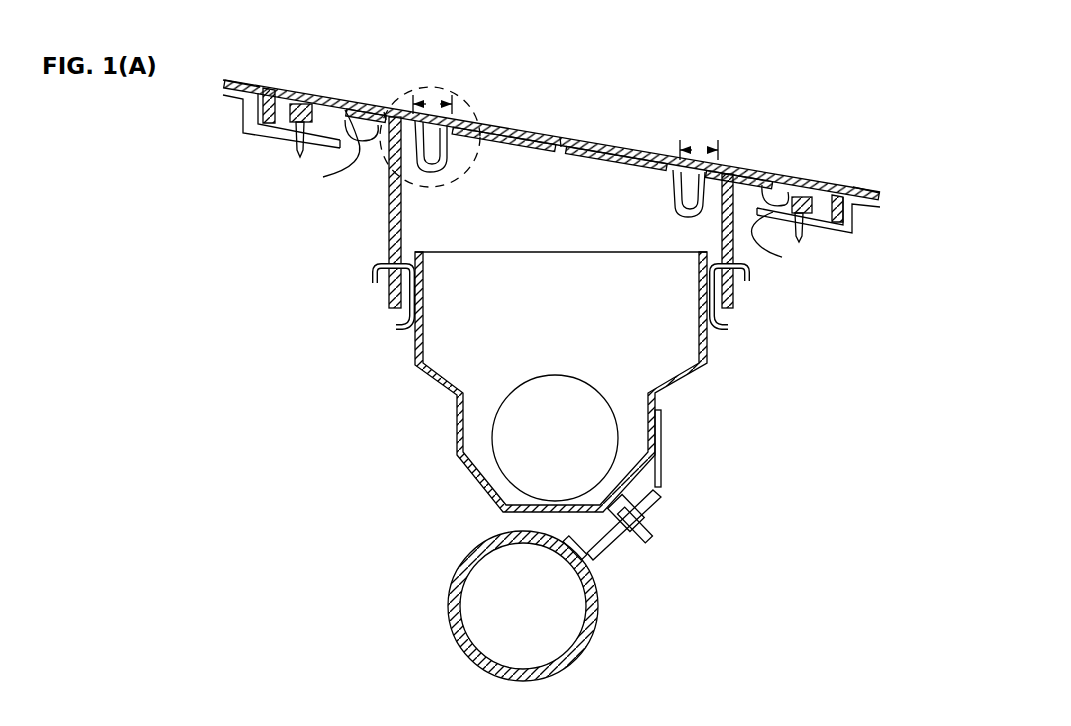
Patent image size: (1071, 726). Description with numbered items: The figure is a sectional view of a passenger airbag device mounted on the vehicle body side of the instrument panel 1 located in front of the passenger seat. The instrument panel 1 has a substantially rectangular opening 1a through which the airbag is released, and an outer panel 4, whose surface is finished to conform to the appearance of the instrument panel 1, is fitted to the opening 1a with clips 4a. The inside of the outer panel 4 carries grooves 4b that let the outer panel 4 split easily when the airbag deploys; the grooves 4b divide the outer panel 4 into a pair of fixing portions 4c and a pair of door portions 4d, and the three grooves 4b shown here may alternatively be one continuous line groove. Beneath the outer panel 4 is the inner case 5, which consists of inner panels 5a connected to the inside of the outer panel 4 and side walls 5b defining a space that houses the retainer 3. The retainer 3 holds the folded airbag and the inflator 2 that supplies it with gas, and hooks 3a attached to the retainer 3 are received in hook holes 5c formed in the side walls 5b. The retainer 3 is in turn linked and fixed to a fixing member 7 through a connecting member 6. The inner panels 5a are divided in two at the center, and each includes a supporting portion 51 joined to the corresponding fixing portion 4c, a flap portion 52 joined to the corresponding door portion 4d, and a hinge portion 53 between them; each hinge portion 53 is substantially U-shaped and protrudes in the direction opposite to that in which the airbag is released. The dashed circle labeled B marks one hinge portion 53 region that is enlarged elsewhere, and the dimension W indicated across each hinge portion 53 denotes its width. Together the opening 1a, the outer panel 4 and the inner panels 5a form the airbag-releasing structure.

The instrument panel 1 is at (235, 82).
The opening 1a is at (545, 192).
The inflator 2 is at (515, 437).
The retainer 3 is at (663, 363).
The hook 3a is at (375, 281).
The outer panel 4 is at (595, 123).
The clip 4a is at (290, 125).
The groove 4b is at (387, 110).
The fixing portion 4c is at (372, 110).
The door portion 4d is at (463, 107).
The inner case 5 is at (372, 182).
The inner panel 5a is at (497, 160).
The side wall 5b is at (390, 207).
The hook hole 5c is at (387, 257).
The supporting portion 51 is at (300, 117).
The flap portion 52 is at (520, 153).
The hinge portion 53 is at (440, 170).
The connecting member 6 is at (660, 482).
The fixing member 7 is at (460, 567).
The part B is at (473, 93).
The width W is at (565, 127).